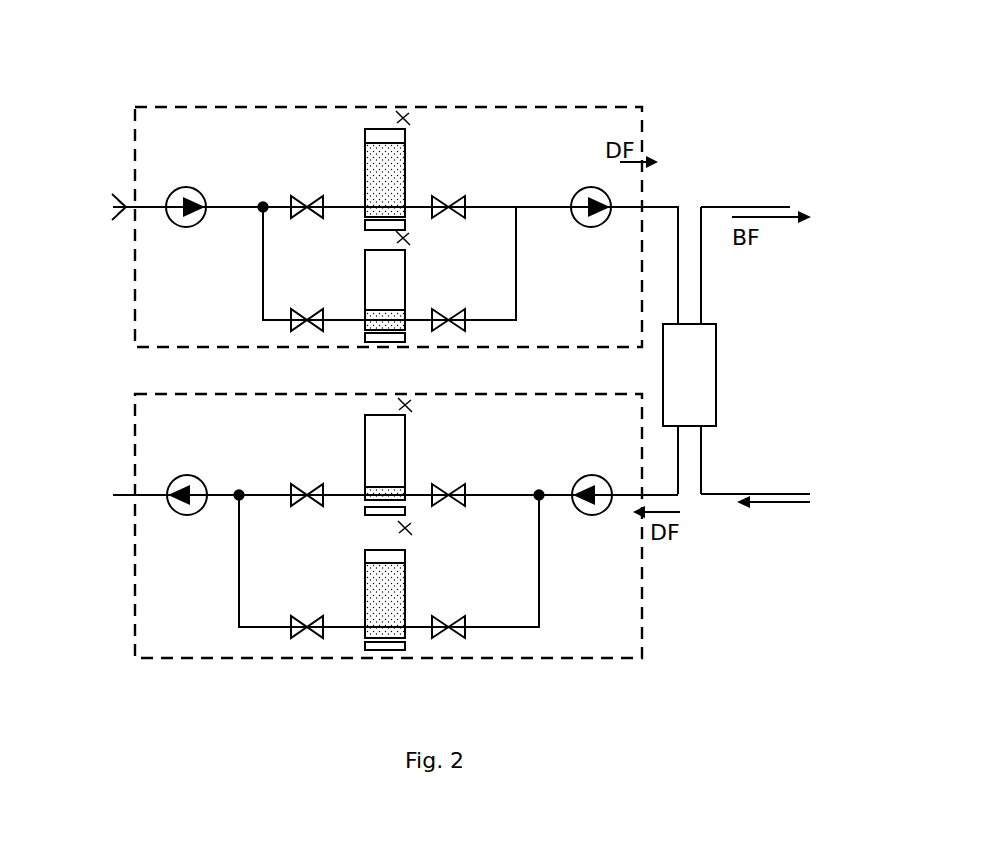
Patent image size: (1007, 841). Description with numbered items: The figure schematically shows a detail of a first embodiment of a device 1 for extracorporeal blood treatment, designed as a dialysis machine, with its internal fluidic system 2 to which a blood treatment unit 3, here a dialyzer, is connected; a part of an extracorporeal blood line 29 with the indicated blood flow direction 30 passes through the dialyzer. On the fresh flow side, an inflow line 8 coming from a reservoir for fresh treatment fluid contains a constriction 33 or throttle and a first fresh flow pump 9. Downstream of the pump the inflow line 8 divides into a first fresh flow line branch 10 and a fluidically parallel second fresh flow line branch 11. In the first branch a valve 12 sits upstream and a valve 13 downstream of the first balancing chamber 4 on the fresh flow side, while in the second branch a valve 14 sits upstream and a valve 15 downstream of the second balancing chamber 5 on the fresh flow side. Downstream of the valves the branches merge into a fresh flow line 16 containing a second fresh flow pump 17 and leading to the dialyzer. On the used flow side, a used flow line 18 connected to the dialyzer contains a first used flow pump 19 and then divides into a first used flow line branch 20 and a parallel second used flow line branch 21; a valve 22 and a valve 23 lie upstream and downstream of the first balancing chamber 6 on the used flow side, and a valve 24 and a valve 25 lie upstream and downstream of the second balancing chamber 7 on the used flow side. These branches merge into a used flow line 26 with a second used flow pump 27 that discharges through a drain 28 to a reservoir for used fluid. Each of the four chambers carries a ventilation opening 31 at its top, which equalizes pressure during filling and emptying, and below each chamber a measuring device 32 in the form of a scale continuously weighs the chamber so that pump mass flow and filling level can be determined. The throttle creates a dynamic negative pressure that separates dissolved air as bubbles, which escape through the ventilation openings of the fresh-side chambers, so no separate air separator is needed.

The device 1 is at (756, 100).
The internal fluidic system 2 is at (700, 183).
The blood treatment unit 3 is at (703, 348).
The first balancing chamber on the fresh flow side 4 is at (385, 188).
The second balancing chamber on the fresh flow side 5 is at (393, 272).
The first balancing chamber on the used flow side 6 is at (380, 448).
The second balancing chamber on the used flow side 7 is at (385, 588).
The inflow line 8 is at (155, 207).
The first fresh flow pump 9 is at (183, 215).
The first fresh flow line branch 10 is at (263, 202).
The second fresh flow line branch 11 is at (260, 284).
The valve 12 is at (300, 205).
The valve 13 is at (456, 202).
The valve 14 is at (290, 324).
The valve 15 is at (457, 312).
The fresh flow line 16 is at (553, 207).
The second fresh flow pump 17 is at (586, 200).
The used flow line 18 is at (678, 497).
The first used flow pump 19 is at (595, 510).
The first used flow line branch 20 is at (540, 490).
The second used flow line branch 21 is at (545, 612).
The valve 22 is at (460, 488).
The valve 23 is at (298, 510).
The valve 24 is at (443, 640).
The valve 25 is at (297, 635).
The used flow line 26 is at (232, 498).
The second used flow pump 27 is at (183, 510).
The drain 28 is at (95, 500).
The extracorporeal blood line 29 is at (758, 494).
The blood flow direction 30 is at (768, 220).
The ventilation opening 31 is at (403, 118).
The measuring device 32 is at (365, 225).
The constriction 33 is at (125, 220).